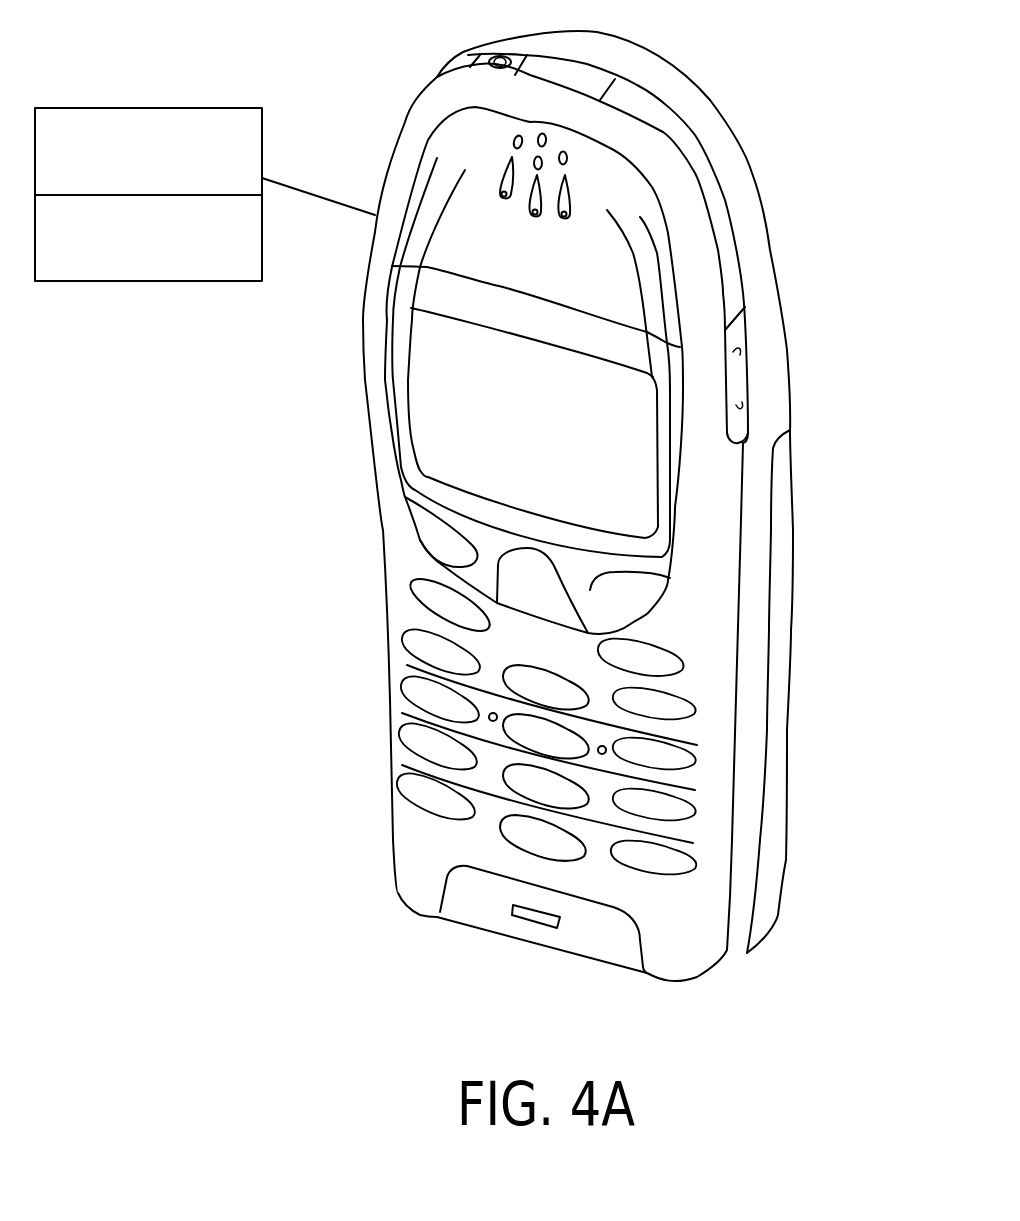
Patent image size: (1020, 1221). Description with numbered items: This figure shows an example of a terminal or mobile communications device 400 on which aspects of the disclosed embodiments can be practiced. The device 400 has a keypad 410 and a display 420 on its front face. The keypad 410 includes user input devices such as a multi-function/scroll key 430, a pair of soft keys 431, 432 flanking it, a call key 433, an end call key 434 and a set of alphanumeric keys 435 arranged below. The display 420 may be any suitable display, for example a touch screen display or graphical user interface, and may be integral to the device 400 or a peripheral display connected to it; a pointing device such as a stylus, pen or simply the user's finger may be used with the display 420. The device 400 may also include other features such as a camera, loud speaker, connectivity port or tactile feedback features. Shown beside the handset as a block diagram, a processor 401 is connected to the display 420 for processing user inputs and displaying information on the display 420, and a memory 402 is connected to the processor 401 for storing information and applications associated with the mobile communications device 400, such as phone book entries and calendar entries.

The mobile communications device 400 is at (600, 543).
The processor 401 is at (150, 115).
The memory 402 is at (150, 275).
The keypad 410 is at (660, 882).
The display 420 is at (628, 478).
The multi-function/scroll key 430 is at (548, 569).
The soft key 431 is at (430, 535).
The soft key 432 is at (642, 603).
The call key 433 is at (438, 597).
The end call key 434 is at (640, 658).
The alphanumeric keys 435 is at (438, 803).